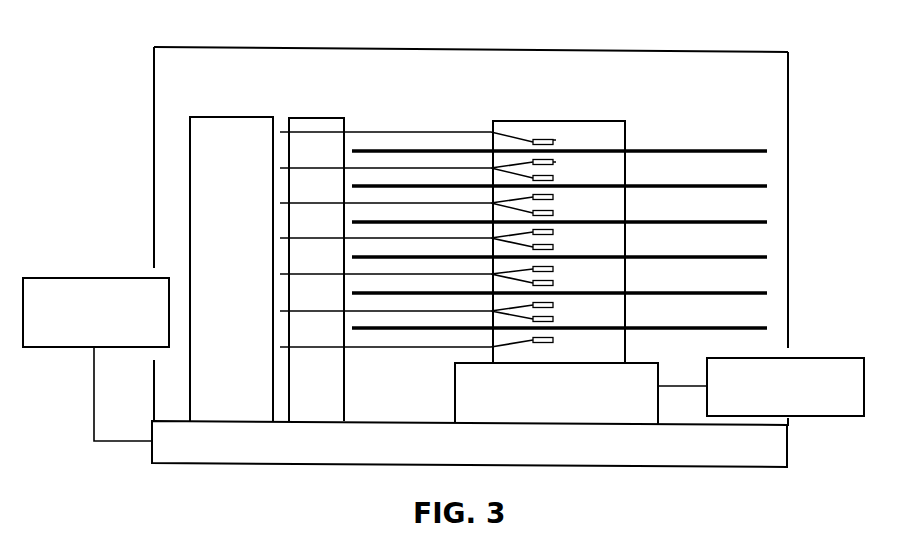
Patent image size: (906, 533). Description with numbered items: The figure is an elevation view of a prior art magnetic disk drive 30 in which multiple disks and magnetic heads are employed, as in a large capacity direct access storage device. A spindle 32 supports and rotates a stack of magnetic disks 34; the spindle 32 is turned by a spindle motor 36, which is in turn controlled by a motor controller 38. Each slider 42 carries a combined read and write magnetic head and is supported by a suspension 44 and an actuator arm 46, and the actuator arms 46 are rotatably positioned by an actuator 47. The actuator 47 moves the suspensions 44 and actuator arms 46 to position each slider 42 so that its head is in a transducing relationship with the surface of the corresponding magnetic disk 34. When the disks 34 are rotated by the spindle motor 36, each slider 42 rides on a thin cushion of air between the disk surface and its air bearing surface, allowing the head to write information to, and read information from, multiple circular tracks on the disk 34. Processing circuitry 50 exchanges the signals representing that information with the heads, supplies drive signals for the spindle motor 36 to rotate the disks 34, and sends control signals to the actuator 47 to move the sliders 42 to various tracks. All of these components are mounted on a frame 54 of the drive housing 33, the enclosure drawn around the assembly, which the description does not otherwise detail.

The magnetic disk drive 30 is at (676, 126).
The spindle 32 is at (618, 121).
The housing 33 is at (700, 51).
The magnetic disk 34 is at (757, 152).
The spindle motor 36 is at (572, 407).
The motor controller 38 is at (820, 418).
The slider 42 is at (555, 161).
The suspension 44 is at (526, 172).
The actuator arm 46 is at (457, 168).
The actuator 47 is at (225, 117).
The processing circuitry 50 is at (68, 278).
The frame 54 is at (205, 465).